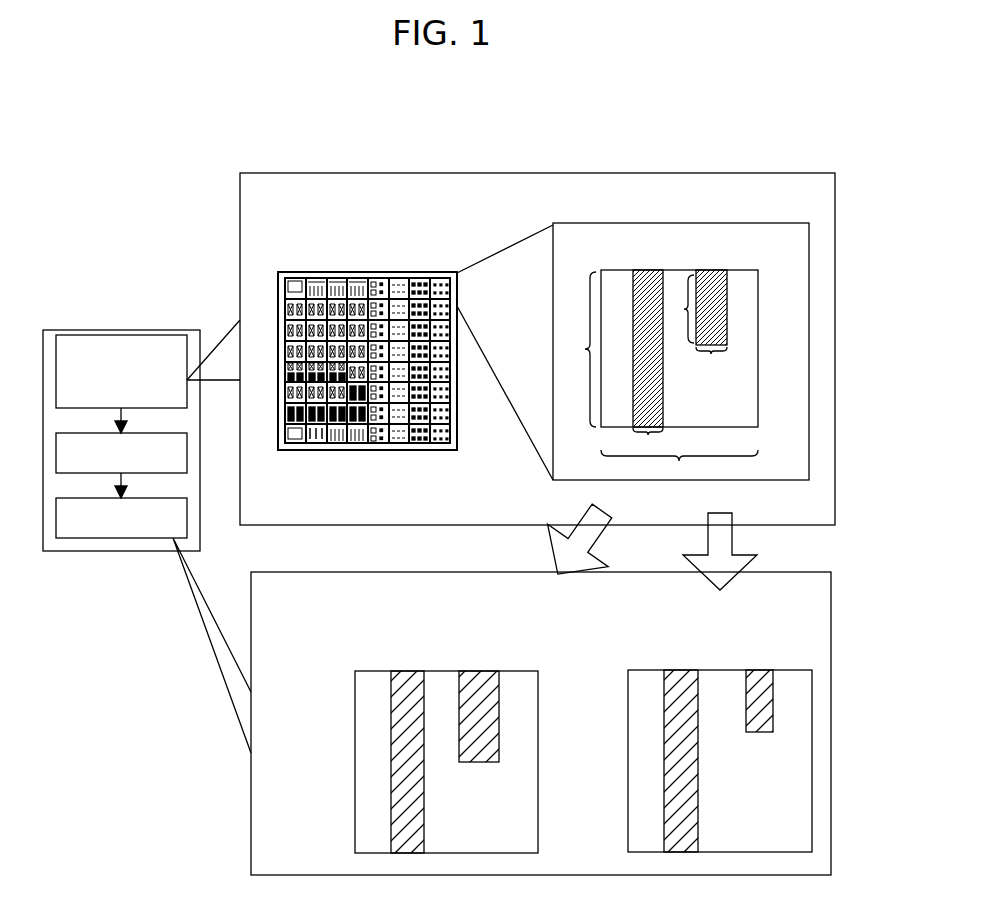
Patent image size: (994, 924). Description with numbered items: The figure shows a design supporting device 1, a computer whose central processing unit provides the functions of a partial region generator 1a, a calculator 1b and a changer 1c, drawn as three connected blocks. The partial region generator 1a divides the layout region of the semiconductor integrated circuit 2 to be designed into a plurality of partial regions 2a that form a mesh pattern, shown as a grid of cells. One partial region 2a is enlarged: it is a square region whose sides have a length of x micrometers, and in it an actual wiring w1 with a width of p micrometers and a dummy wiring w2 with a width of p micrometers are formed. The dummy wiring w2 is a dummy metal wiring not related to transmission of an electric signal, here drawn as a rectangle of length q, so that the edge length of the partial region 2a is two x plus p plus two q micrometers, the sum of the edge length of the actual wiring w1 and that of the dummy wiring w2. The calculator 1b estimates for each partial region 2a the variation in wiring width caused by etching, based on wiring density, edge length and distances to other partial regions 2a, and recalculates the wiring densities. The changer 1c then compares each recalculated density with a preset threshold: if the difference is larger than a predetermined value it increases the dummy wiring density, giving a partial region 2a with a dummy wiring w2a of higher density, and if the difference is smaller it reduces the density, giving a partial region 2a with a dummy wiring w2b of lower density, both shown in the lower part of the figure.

The design supporting device 1 is at (73, 330).
The partial region generator 1a is at (163, 335).
The calculator 1b is at (187, 460).
The changer 1c is at (187, 522).
The semiconductor integrated circuit 2 is at (337, 273).
The partial region 2a is at (443, 273).
The actual wiring w1 is at (642, 268).
The dummy wiring w2 is at (704, 268).
The dummy wiring with higher density w2a is at (485, 678).
The dummy wiring with lower density w2b is at (765, 678).
The side length of partial region x is at (664, 378).
The length of dummy wiring q is at (681, 309).
The wiring width p is at (680, 402).